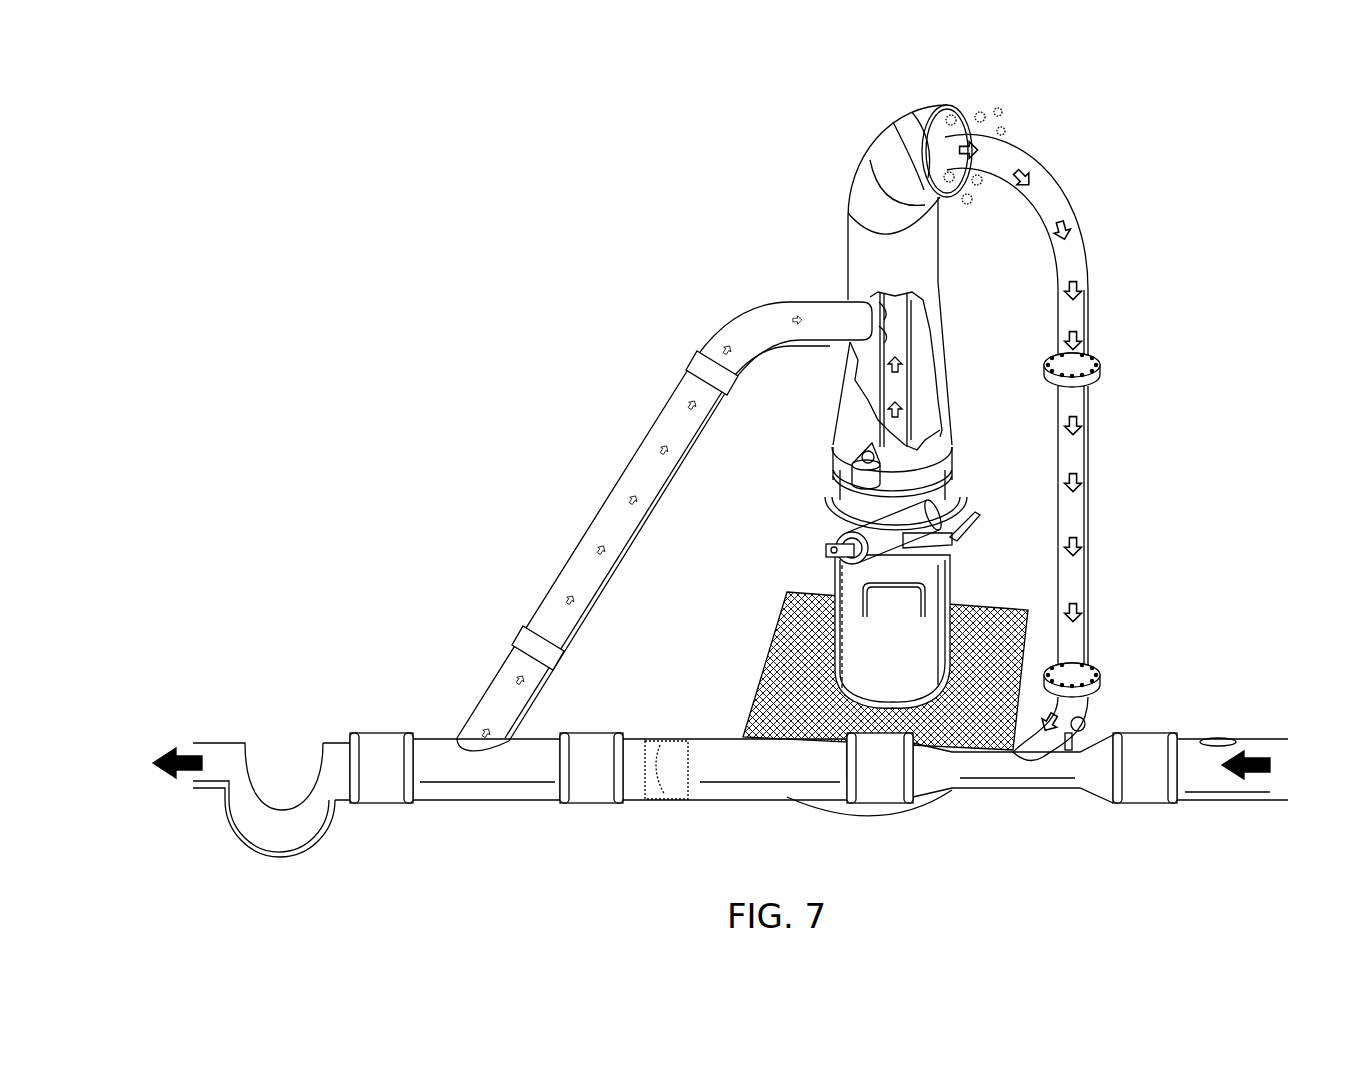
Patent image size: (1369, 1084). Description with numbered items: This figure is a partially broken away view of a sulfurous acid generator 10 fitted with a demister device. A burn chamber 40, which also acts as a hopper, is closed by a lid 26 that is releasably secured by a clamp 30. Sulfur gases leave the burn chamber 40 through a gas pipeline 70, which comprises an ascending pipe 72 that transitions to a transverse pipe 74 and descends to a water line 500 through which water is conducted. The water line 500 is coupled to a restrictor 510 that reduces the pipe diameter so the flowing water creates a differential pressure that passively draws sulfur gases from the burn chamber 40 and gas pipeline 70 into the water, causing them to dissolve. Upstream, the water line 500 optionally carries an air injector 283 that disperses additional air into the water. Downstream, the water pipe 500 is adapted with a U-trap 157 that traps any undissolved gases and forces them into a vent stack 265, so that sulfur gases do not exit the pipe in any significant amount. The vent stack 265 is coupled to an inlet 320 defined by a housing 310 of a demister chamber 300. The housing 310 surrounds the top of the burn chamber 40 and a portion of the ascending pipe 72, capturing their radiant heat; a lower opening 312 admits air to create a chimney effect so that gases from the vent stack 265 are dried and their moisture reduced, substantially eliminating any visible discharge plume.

The sulfurous acid generator 10 is at (654, 220).
The demister chamber 300 is at (883, 137).
The housing 310 is at (867, 198).
The inlet 320 is at (870, 297).
The ascending pipe 72 is at (905, 340).
The transverse pipe 74 is at (1027, 160).
The gas pipeline 70 is at (1087, 215).
The burn chamber 40 is at (925, 445).
The lower opening 312 is at (850, 452).
The lid 26 is at (838, 503).
The clamp 30 is at (955, 535).
The vent stack 265 is at (605, 527).
The water line 500 is at (541, 735).
The restrictor 510 is at (1037, 775).
The air injector 283 is at (1218, 740).
The U-trap 157 is at (325, 815).